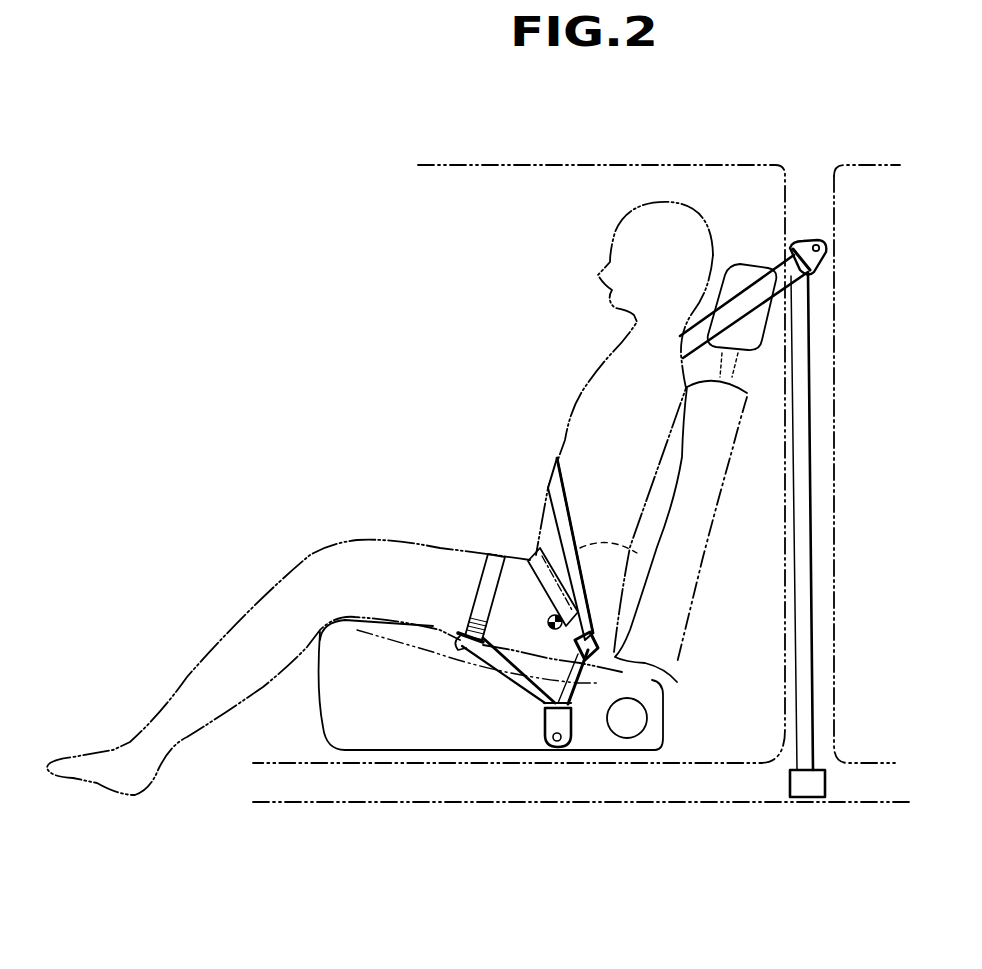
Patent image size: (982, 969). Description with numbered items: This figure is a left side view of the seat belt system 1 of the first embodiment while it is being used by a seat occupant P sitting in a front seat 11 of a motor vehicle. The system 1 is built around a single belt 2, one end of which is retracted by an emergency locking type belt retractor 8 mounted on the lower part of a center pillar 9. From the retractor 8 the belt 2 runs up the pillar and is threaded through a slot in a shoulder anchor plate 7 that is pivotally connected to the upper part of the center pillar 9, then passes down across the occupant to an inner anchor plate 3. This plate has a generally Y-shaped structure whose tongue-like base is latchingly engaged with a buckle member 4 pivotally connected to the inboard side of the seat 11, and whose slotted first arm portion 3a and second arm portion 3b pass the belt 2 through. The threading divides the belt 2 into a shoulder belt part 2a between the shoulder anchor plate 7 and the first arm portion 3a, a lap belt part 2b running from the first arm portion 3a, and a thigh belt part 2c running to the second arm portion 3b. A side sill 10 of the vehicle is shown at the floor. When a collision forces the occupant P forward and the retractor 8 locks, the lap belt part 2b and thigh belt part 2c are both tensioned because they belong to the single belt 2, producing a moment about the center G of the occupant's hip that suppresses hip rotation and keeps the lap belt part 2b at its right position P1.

The seat belt system 1 is at (746, 512).
The belt 2 is at (796, 525).
The shoulder belt part 2a is at (555, 468).
The lap belt part 2b is at (538, 550).
The thigh belt part 2c is at (490, 553).
The inner anchor plate 3 is at (531, 690).
The first arm portion 3a is at (670, 680).
The second arm portion 3b is at (462, 651).
The buckle member 4 is at (560, 748).
The shoulder anchor plate 7 is at (808, 240).
The emergency locking type belt retractor 8 is at (805, 790).
The center pillar 9 is at (780, 678).
The side sill 10 is at (650, 802).
The front seat 11 is at (318, 721).
The seat occupant P is at (597, 376).
The right position P1 is at (600, 540).
The center of the hip G is at (547, 621).